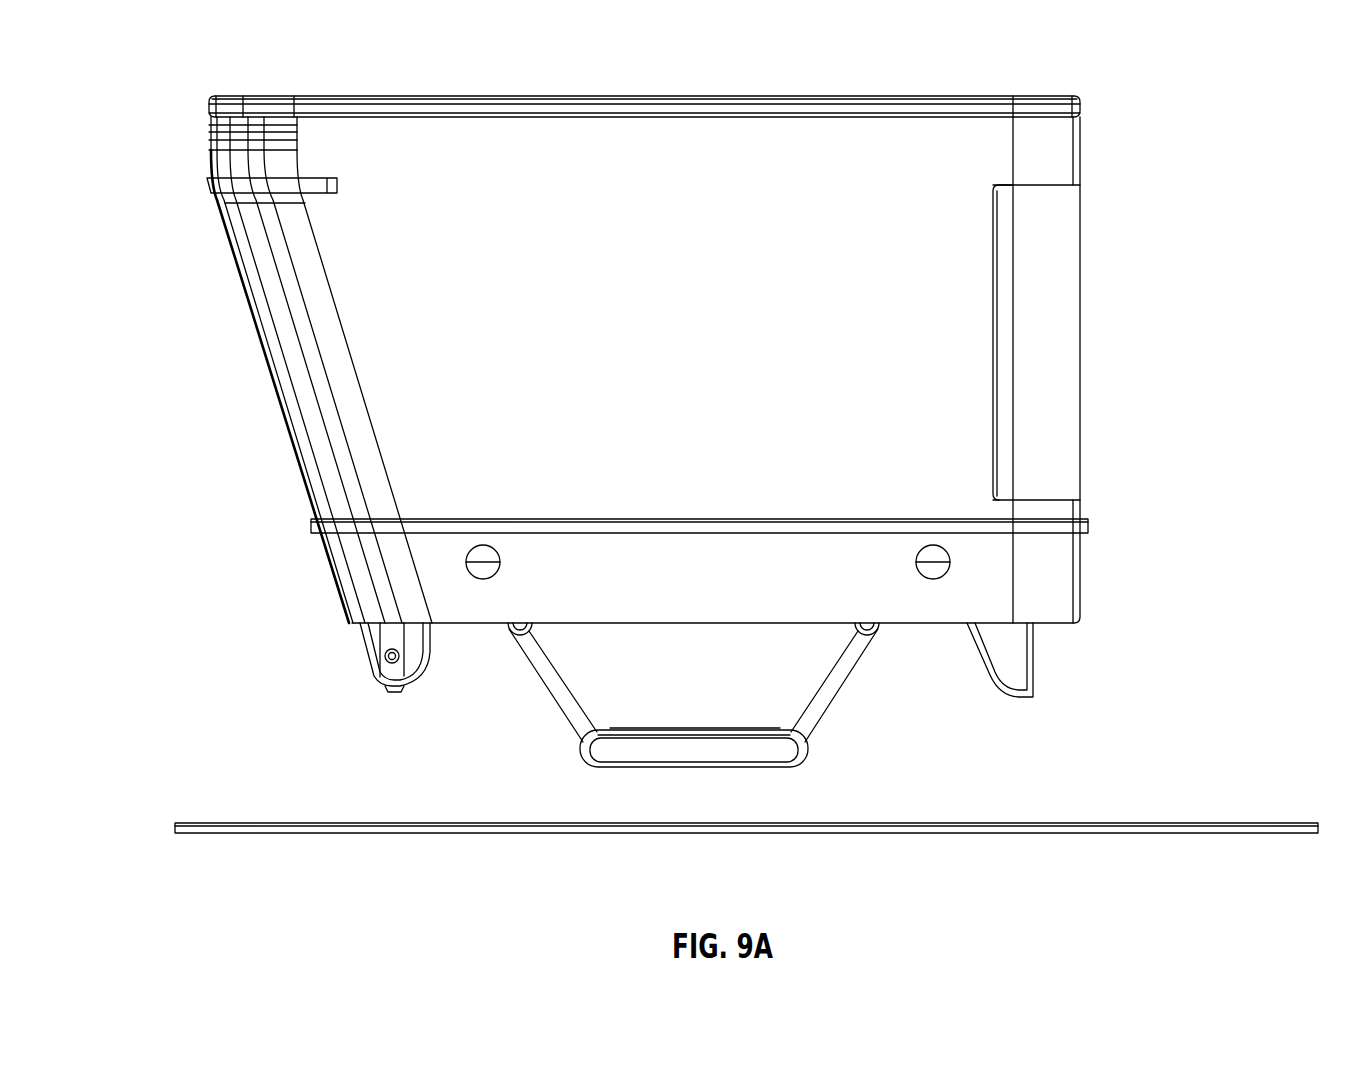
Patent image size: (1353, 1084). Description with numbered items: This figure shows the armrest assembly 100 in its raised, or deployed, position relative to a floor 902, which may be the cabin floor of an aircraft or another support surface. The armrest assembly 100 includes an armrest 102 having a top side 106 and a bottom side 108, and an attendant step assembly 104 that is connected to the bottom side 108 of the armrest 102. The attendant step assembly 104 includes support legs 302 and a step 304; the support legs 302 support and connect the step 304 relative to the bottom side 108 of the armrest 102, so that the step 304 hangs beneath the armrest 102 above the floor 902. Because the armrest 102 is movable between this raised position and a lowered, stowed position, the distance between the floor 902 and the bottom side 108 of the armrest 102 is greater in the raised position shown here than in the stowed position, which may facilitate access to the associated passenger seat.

The armrest assembly 100 is at (166, 72).
The armrest 102 is at (360, 299).
The attendant step assembly 104 is at (582, 780).
The top side 106 is at (418, 96).
The bottom side 108 is at (470, 625).
The support legs 302 is at (553, 687).
The step 304 is at (730, 738).
The floor 902 is at (258, 822).